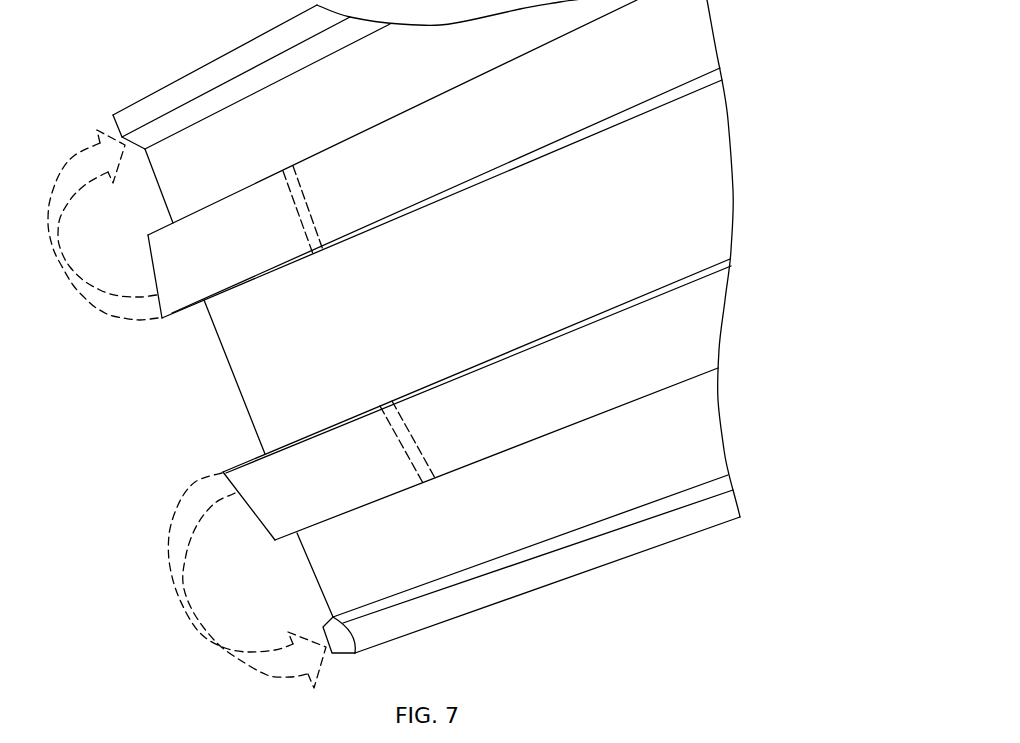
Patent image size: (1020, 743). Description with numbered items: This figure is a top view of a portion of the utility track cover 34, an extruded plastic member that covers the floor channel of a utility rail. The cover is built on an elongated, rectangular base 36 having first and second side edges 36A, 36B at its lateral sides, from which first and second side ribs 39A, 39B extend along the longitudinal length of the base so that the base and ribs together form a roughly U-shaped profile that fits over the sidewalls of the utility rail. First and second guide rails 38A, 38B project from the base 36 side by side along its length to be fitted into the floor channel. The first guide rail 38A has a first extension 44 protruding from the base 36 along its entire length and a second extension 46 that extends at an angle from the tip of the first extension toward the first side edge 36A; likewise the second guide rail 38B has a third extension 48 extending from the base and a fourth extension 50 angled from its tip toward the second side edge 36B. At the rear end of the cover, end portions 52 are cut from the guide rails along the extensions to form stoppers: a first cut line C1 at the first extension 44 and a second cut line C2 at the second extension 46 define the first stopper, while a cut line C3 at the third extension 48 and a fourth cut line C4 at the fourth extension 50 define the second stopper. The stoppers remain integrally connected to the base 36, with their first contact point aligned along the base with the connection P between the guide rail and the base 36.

The utility track cover 34 is at (104, 556).
The base 36 is at (683, 213).
The first side edge 36A is at (140, 150).
The second side edge 36B is at (353, 651).
The first guide rail 38A is at (673, 40).
The second guide rail 38B is at (683, 327).
The first side rib 39A is at (240, 88).
The second side rib 39B is at (483, 567).
The first extension 44 is at (430, 203).
The second extension 46 is at (373, 163).
The third extension 48 is at (483, 362).
The fourth extension 50 is at (532, 398).
The end portions 52 is at (168, 263).
The first cut line C1 is at (330, 248).
The second cut line C2 is at (292, 205).
The third cut line C3 is at (392, 402).
The fourth cut line C4 is at (403, 453).
The connection P is at (533, 163).